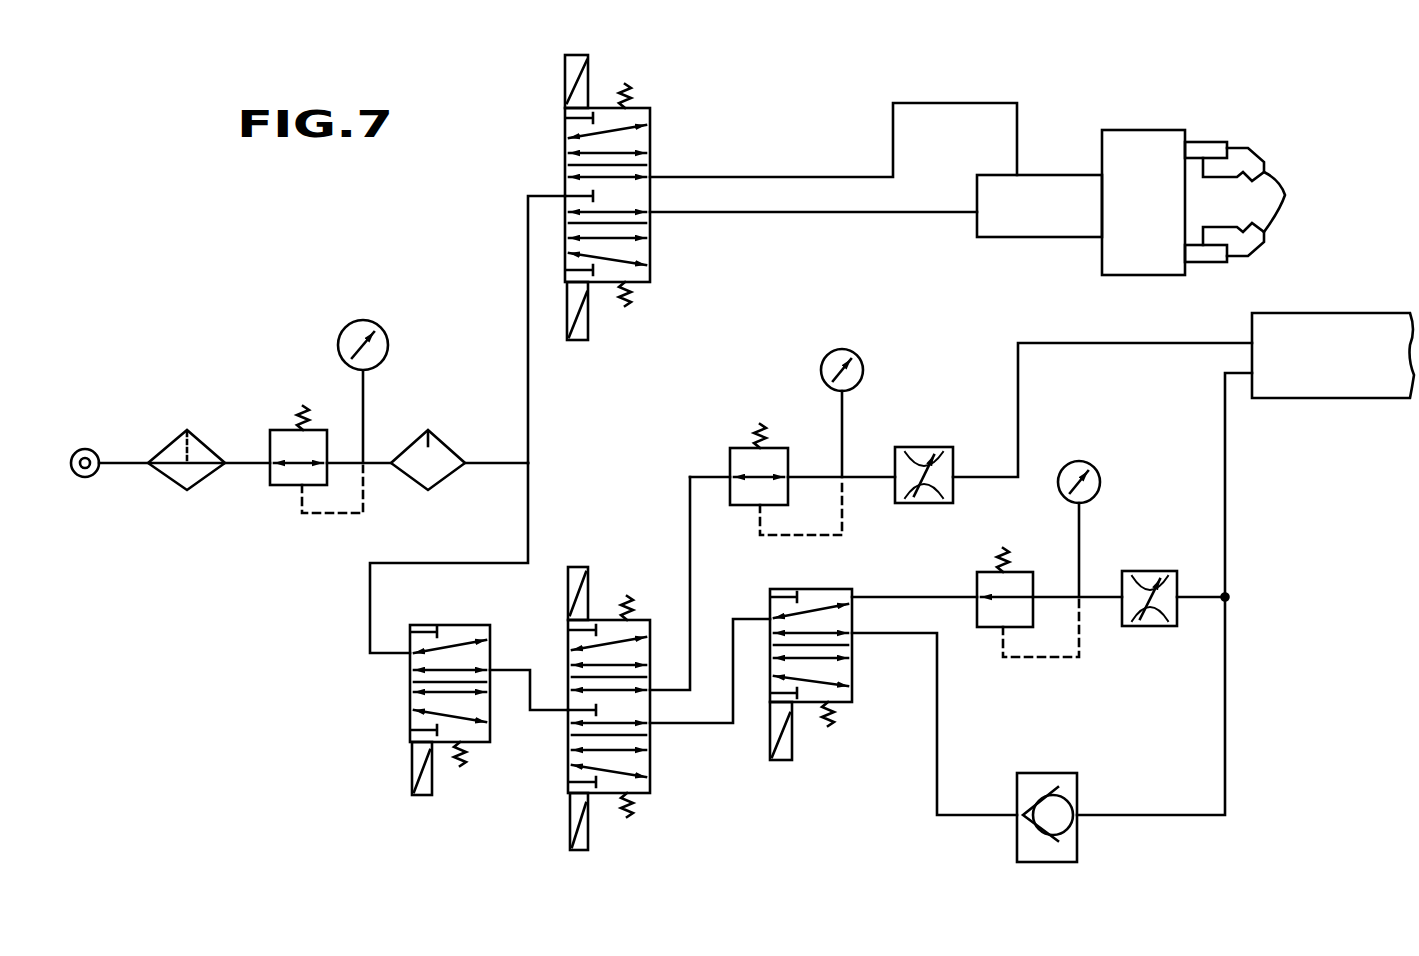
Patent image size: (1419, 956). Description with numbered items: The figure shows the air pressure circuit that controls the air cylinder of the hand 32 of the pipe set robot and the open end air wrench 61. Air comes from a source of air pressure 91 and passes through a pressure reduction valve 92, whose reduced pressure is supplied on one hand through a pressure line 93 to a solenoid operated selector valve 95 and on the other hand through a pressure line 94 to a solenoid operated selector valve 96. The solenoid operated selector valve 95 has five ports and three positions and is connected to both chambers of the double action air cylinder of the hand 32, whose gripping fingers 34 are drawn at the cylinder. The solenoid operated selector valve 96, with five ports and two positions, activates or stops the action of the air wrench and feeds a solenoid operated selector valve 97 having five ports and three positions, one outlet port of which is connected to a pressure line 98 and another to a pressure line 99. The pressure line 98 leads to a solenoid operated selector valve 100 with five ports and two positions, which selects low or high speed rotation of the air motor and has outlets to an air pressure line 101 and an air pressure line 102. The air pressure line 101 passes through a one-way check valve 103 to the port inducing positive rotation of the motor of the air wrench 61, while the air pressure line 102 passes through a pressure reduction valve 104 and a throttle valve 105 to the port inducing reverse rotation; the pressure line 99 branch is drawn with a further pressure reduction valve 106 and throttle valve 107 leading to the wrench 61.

The hand 32 is at (1158, 130).
The gripper fingers 34 is at (1286, 194).
The open end air wrench 61 is at (1283, 313).
The source of air pressure 91 is at (94, 449).
The pressure reduction valve 92 is at (277, 430).
The pressure line 93 is at (531, 383).
The pressure line 94 is at (531, 495).
The solenoid operated selector valve 95 is at (652, 130).
The solenoid operated selector valve 96 is at (410, 701).
The solenoid operated selector valve 97 is at (568, 758).
The pressure line 98 is at (708, 726).
The pressure line 99 is at (690, 531).
The solenoid operated selector valve 100 is at (852, 677).
The air pressure line 101 is at (937, 726).
The air pressure line 102 is at (937, 597).
The one-way check valve 103 is at (1057, 773).
The pressure reduction valve 104 is at (1028, 572).
The throttle valve 105 is at (1160, 571).
The pressure regulator 106 is at (750, 448).
The flow control valve 107 is at (935, 447).